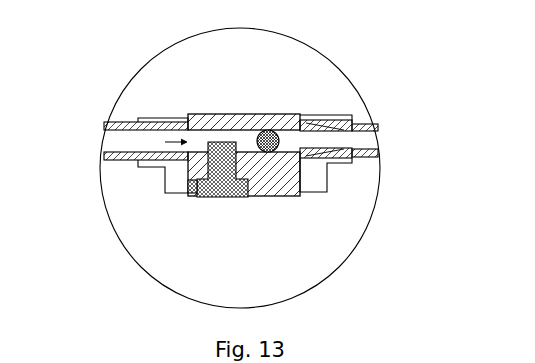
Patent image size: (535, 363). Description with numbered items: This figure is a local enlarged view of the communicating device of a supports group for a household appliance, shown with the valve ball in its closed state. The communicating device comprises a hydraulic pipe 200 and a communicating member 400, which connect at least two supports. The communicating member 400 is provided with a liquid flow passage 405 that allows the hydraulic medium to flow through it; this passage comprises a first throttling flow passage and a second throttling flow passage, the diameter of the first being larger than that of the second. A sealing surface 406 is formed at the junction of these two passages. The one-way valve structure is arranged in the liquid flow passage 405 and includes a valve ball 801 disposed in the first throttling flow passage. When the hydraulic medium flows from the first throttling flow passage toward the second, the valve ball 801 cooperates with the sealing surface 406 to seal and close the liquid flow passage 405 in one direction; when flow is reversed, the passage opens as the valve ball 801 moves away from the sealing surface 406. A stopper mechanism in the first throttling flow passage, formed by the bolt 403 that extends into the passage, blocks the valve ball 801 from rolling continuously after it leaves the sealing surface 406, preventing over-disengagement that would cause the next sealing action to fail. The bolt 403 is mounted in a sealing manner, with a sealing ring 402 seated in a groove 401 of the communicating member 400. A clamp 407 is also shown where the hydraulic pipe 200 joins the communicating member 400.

The communicating member 400 is at (158, 53).
The hydraulic pipe 200 is at (372, 117).
The clamp 407 is at (140, 117).
The groove 401 is at (193, 176).
The sealing ring 402 is at (193, 183).
The bolt 403 is at (197, 193).
The liquid flow passage 405 is at (306, 140).
The sealing surface 406 is at (269, 130).
The valve ball 801 is at (272, 150).